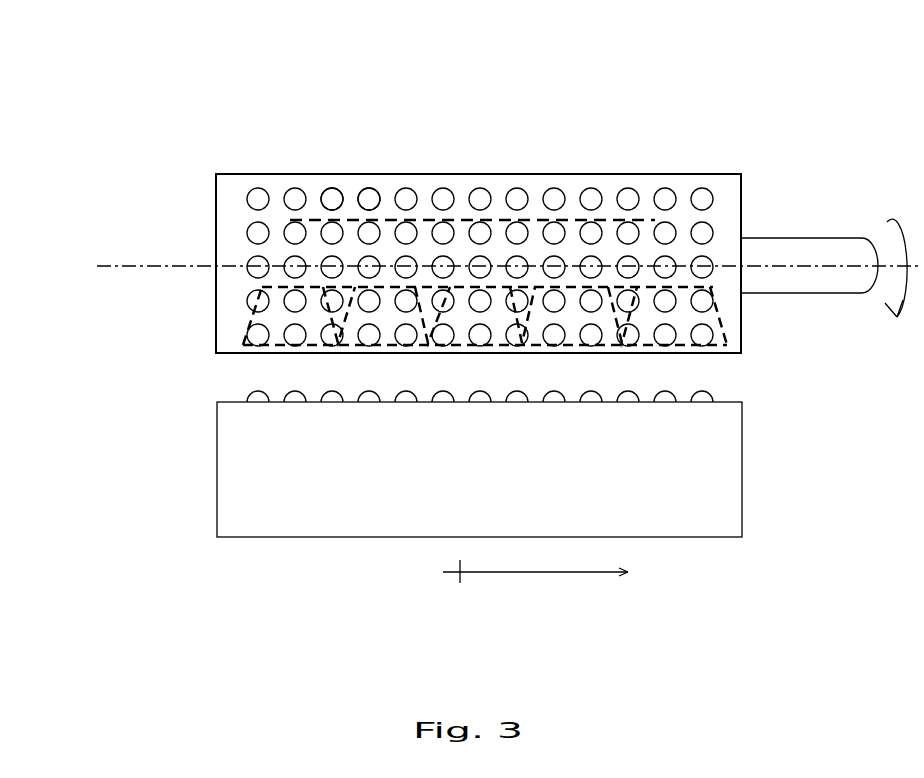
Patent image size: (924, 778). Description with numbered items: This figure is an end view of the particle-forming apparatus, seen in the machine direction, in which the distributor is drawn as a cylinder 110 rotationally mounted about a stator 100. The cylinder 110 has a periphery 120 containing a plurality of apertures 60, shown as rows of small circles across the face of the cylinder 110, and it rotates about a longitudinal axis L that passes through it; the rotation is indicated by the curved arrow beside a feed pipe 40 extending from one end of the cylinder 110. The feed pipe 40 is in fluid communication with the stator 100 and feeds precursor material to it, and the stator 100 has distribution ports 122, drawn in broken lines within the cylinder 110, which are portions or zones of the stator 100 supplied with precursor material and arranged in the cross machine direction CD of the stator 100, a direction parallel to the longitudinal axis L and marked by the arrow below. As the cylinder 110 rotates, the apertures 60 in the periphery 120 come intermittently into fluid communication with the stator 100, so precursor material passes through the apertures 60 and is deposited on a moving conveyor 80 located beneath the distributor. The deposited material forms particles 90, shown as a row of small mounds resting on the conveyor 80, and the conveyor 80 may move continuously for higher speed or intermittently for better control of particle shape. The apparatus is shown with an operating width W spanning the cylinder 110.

The stator 100 is at (564, 188).
The cylinder 110 is at (693, 175).
The periphery 120 is at (393, 175).
The distribution ports 122 is at (285, 228).
The apertures 60 is at (338, 190).
The feed pipe 40 is at (815, 248).
The particles 90 is at (310, 353).
The conveyor 80 is at (681, 491).
The operating width W is at (253, 388).
The longitudinal axis L is at (143, 266).
The cross machine direction CD is at (485, 575).